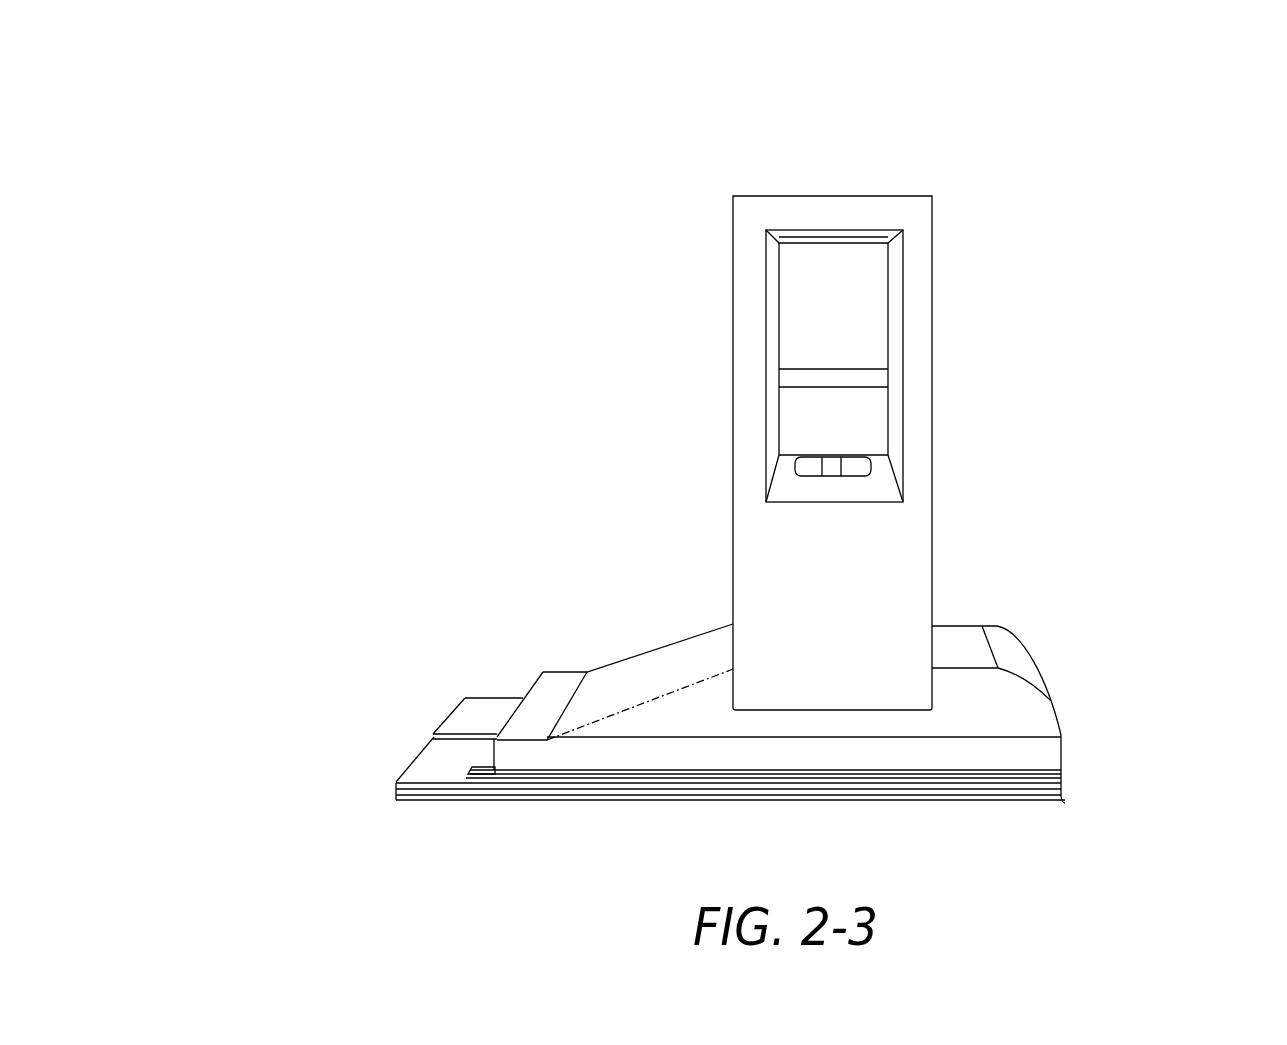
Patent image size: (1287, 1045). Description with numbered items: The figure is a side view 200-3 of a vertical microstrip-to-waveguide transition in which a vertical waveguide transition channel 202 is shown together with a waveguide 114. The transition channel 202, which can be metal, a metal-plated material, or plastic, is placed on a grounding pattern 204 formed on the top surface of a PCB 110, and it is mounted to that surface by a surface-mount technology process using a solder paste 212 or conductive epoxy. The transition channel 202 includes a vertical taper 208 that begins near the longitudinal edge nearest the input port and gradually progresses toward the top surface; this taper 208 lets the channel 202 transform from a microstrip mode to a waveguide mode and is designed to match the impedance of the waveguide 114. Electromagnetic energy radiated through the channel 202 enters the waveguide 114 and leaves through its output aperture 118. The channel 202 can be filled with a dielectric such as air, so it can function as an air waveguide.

The side view 200-3 is at (221, 66).
The output aperture 118 is at (853, 300).
The waveguide 114 is at (907, 536).
The vertical waveguide transition channel 202 is at (1030, 706).
The vertical taper 208 is at (669, 697).
The PCB 110 is at (430, 772).
The grounding pattern 204 is at (470, 776).
The solder paste 212 is at (770, 776).